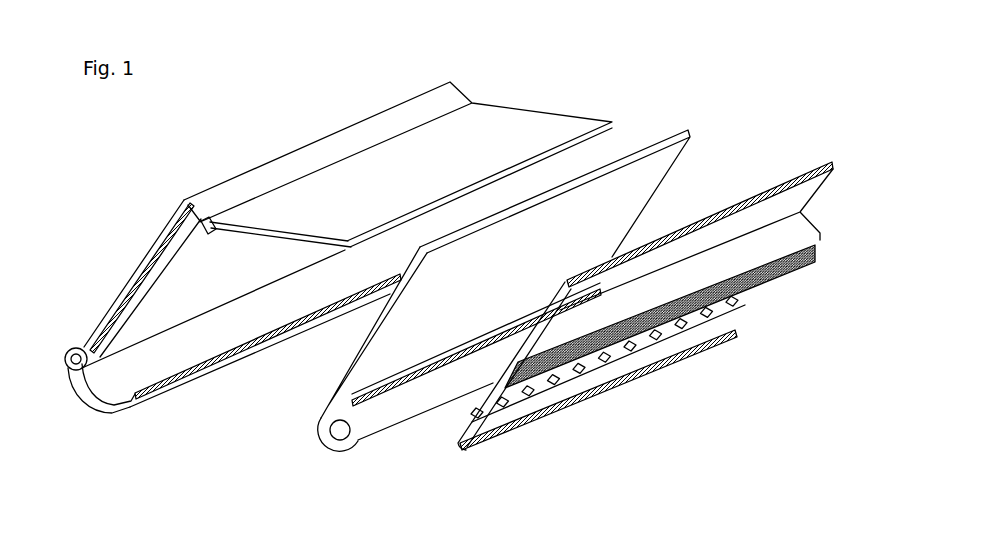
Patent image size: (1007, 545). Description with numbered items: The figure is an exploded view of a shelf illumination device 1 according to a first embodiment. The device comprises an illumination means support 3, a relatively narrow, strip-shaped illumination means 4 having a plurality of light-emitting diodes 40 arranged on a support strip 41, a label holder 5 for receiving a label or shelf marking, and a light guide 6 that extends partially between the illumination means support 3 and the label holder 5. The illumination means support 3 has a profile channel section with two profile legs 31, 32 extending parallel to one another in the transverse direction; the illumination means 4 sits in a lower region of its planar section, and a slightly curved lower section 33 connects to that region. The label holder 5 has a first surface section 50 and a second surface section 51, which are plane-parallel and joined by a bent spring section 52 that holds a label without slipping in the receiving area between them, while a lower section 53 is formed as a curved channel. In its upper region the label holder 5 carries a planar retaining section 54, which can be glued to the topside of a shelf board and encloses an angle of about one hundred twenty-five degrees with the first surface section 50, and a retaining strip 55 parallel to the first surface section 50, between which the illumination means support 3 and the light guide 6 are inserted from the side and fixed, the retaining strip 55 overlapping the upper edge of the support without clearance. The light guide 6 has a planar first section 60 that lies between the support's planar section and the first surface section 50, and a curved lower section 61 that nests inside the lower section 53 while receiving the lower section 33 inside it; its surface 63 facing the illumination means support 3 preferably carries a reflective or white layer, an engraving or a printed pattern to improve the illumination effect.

The shelf illumination device 1 is at (222, 440).
The illumination means support 3 is at (645, 327).
The illumination means 4 is at (646, 384).
The label holder 5 is at (312, 276).
The light guide 6 is at (527, 312).
The profile leg 31 is at (802, 258).
The profile leg 32 is at (800, 225).
The lower section of the illumination means support 33 is at (620, 370).
The light-emitting diodes 40 is at (573, 378).
The support strip 41 is at (723, 313).
The first surface section 50 is at (140, 283).
The second surface section 51 is at (157, 253).
The spring section 52 is at (63, 353).
The lower section of the label holder 53 is at (97, 417).
The retaining section 54 is at (488, 140).
The retaining strip 55 is at (212, 234).
The first section of the light guide 60 is at (362, 340).
The lower section of the light guide 61 is at (332, 442).
The surface of the light guide 63 is at (521, 285).